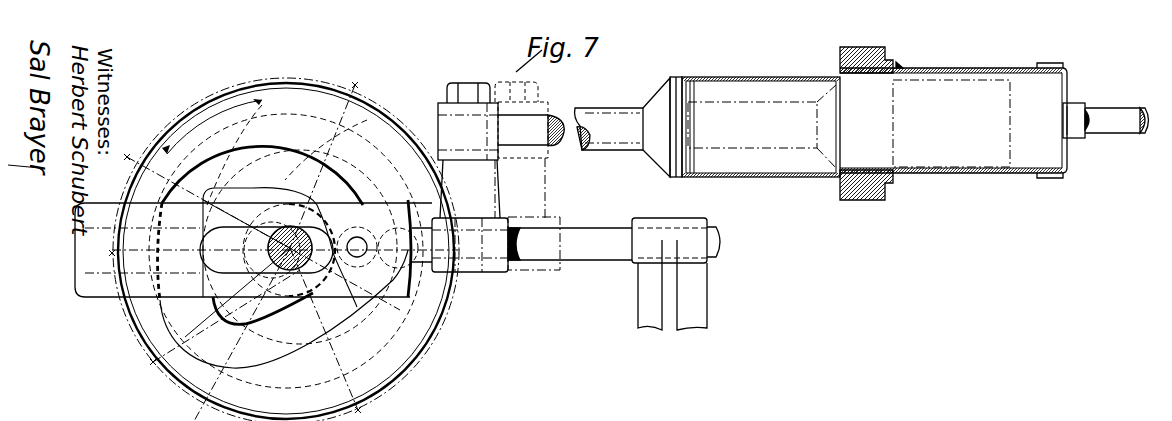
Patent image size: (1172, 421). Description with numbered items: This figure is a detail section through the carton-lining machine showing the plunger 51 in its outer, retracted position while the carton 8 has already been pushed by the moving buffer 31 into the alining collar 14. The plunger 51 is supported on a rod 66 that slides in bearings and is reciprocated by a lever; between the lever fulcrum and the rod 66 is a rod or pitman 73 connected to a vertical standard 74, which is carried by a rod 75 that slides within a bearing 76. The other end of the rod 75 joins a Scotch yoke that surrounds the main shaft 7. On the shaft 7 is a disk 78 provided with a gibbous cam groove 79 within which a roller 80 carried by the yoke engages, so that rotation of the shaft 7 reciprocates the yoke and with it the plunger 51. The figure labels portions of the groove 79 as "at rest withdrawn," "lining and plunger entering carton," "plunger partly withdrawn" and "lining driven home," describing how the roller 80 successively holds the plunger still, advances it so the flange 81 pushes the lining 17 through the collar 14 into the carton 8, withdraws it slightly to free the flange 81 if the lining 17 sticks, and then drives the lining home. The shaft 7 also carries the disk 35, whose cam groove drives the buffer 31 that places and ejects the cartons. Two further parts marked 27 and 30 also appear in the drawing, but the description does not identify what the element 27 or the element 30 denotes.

The main shaft 7 is at (290, 270).
The carton 8 is at (953, 127).
The alining collar 14 is at (896, 66).
The lining 17 is at (777, 175).
The plunger 27 is at (253, 248).
The lining 30 is at (300, 224).
The moving buffer 31 is at (1080, 108).
The disk 35 is at (230, 210).
The plunger 51 is at (762, 126).
The rod 66 is at (607, 112).
The rod or pitman 73 is at (540, 122).
The vertical standard 74 is at (496, 177).
The rod 75 is at (570, 252).
The bearing 76 is at (692, 274).
The disk 78 is at (318, 241).
The cam groove 79 is at (283, 257).
The roller 80 is at (377, 223).
The flange 81 is at (677, 77).